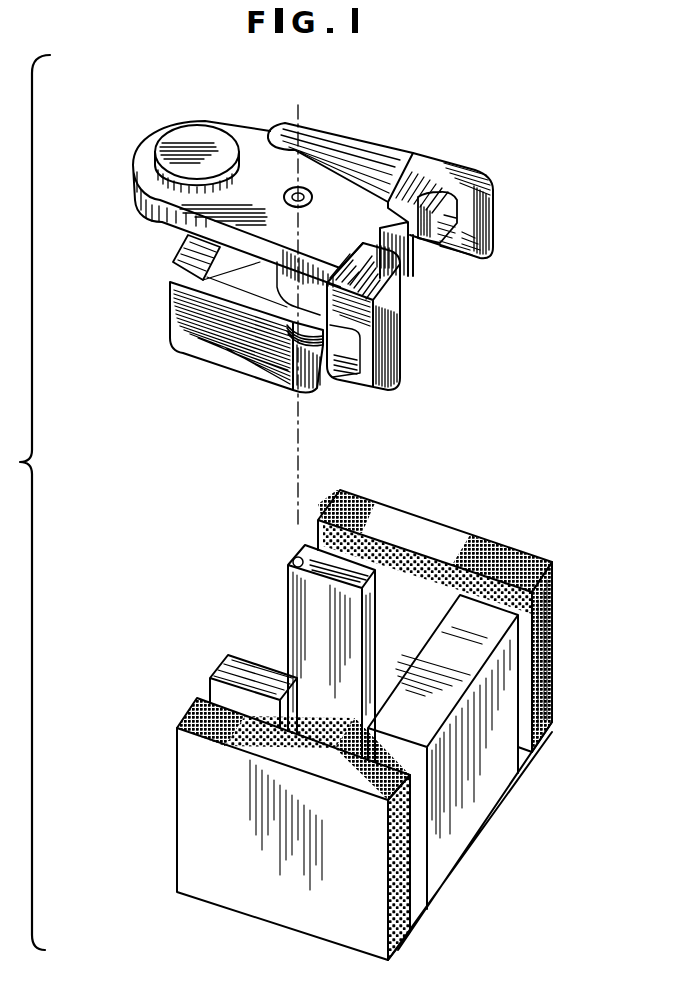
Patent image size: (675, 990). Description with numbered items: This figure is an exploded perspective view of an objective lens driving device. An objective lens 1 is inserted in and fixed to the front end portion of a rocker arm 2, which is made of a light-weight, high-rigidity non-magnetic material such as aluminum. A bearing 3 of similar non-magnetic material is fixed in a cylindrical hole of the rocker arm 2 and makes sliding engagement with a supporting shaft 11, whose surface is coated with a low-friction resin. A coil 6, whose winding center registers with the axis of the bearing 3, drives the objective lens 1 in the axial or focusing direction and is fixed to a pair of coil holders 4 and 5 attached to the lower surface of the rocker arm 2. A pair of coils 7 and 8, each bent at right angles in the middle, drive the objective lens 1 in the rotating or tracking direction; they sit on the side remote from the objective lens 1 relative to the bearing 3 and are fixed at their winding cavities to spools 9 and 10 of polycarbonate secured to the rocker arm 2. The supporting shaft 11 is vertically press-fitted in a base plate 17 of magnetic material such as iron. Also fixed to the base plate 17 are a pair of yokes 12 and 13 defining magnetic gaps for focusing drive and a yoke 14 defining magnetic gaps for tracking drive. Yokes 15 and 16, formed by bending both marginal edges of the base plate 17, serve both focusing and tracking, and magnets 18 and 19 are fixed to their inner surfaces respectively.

The objective lens 1 is at (180, 135).
The rocker arm 2 is at (135, 197).
The bearing 3 is at (315, 196).
The coil holder 4 is at (180, 253).
The coil holder 5 is at (307, 308).
The coil 6 is at (170, 322).
The coil 7 is at (447, 157).
The coil 8 is at (398, 328).
The spool 9 is at (450, 213).
The spool 10 is at (357, 353).
The supporting shaft 11 is at (300, 597).
The yoke 12 is at (322, 553).
The yoke 13 is at (225, 667).
The yoke 14 is at (492, 640).
The yoke 15 is at (498, 542).
The yoke 16 is at (192, 765).
The base plate 17 is at (520, 742).
The magnet 18 is at (430, 547).
The magnet 19 is at (187, 715).